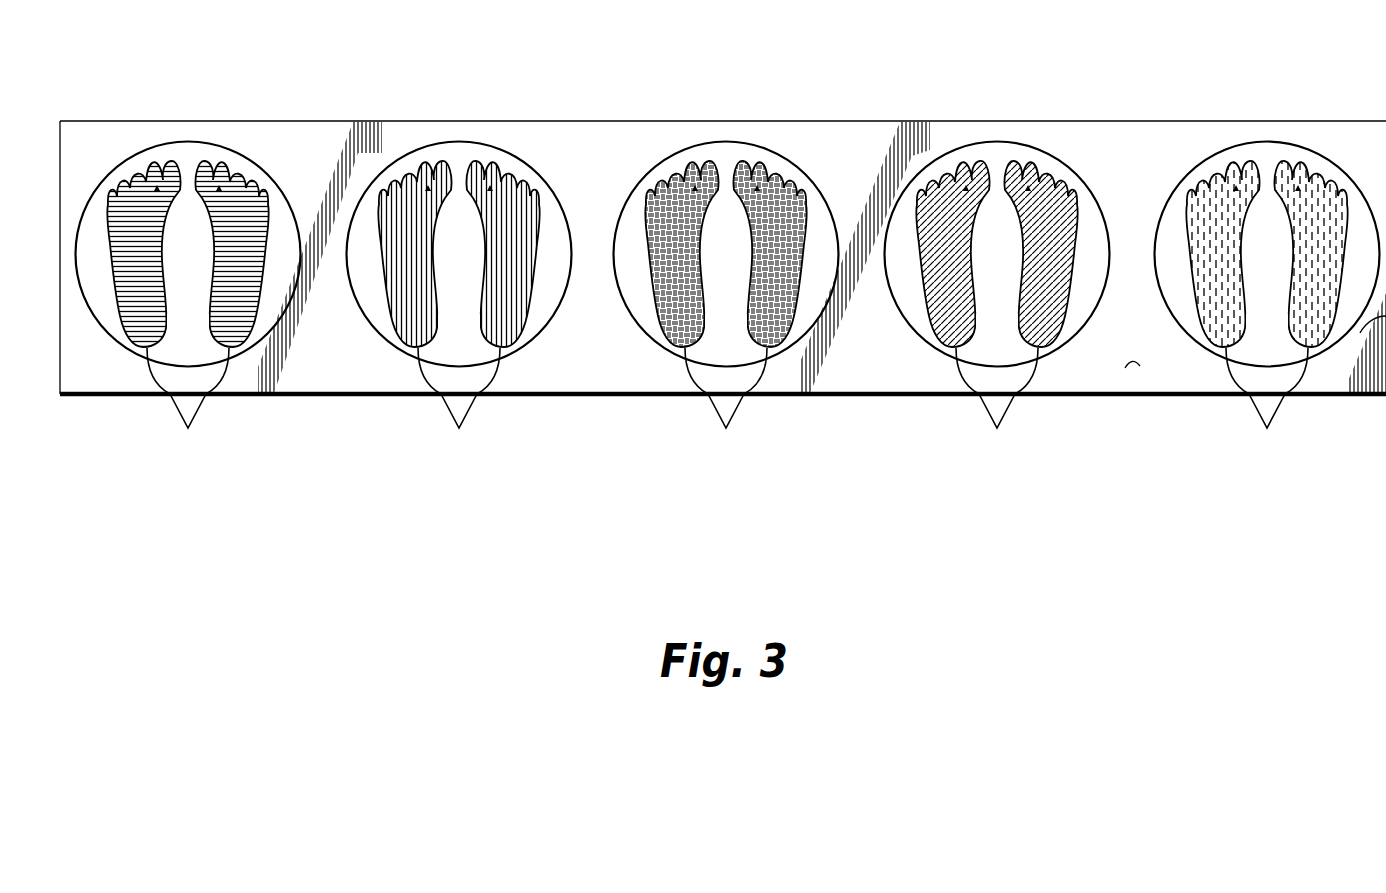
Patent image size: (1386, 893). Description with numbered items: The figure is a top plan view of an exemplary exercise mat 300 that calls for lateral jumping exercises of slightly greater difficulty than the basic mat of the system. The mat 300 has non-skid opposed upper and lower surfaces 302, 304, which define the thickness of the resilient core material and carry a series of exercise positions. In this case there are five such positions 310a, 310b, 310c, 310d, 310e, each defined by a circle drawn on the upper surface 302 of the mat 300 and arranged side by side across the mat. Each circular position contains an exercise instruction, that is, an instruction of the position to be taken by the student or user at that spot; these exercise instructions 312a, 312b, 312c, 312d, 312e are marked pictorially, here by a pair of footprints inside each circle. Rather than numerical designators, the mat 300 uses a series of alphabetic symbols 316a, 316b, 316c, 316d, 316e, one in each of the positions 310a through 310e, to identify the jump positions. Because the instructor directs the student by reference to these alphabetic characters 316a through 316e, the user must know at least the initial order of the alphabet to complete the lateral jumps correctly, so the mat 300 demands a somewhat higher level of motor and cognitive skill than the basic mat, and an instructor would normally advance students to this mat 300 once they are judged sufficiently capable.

The exercise mat 300 is at (400, 522).
The upper surface 302 is at (903, 363).
The lower surface 304 is at (1125, 368).
The exercise position 310a is at (188, 207).
The exercise position 310b is at (459, 207).
The exercise position 310c is at (726, 207).
The exercise position 310d is at (997, 207).
The exercise position 310e is at (1267, 207).
The exercise instruction 312a is at (188, 405).
The exercise instruction 312b is at (459, 405).
The exercise instruction 312c is at (726, 405).
The exercise instruction 312d is at (997, 405).
The exercise instruction 312e is at (1267, 405).
The alphabetic symbol 316a is at (203, 200).
The alphabetic symbol 316b is at (474, 200).
The alphabetic symbol 316c is at (742, 200).
The alphabetic symbol 316d is at (1012, 200).
The alphabetic symbol 316e is at (1287, 200).